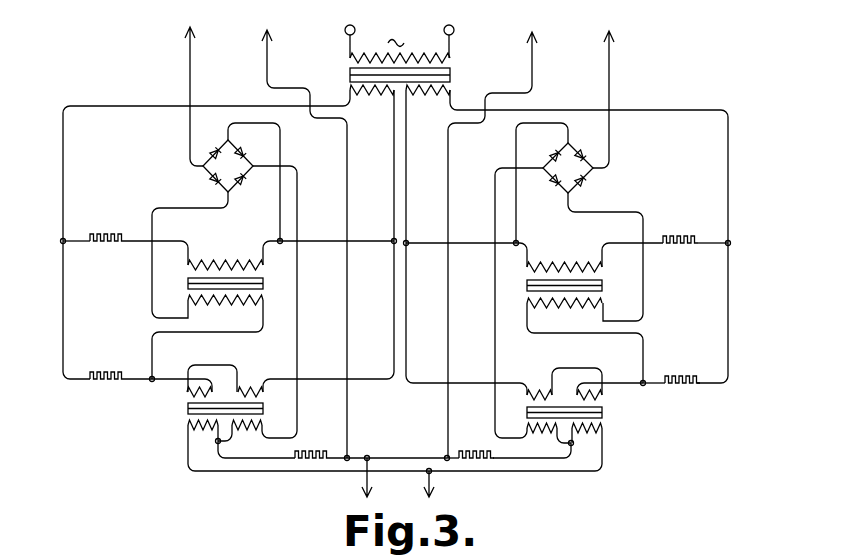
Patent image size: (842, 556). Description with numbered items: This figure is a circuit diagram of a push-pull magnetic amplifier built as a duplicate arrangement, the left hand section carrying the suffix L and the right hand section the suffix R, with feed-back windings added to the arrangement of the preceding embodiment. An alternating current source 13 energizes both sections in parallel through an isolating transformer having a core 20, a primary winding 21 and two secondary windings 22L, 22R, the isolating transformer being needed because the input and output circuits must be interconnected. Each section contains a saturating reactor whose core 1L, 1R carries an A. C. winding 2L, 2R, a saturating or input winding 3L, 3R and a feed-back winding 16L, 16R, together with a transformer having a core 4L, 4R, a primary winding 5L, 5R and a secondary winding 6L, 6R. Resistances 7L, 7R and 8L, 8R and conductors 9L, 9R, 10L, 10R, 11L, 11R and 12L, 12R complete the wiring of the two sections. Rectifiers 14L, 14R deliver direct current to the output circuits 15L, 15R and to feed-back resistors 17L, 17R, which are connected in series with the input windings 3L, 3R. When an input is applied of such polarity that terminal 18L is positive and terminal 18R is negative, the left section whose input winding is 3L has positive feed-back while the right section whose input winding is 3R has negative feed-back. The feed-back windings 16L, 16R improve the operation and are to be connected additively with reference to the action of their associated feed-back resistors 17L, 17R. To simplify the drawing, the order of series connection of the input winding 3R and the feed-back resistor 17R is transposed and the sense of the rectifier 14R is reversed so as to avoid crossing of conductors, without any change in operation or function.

The alternating current source 13 is at (399, 31).
The primary winding 21 is at (400, 49).
The core 20 is at (414, 74).
The secondary winding 22L is at (372, 102).
The secondary winding 22R is at (428, 102).
The output circuit 15L is at (266, 237).
The output circuit 15R is at (531, 238).
The conductor 12L is at (206, 234).
The conductor 12R is at (589, 236).
The conductor 11L is at (333, 234).
The conductor 11R is at (462, 236).
The conductor 9L is at (280, 285).
The conductor 9R is at (510, 285).
The conductor 10L is at (190, 253).
The conductor 10R is at (608, 256).
The rectifier 14L is at (243, 183).
The rectifier 14R is at (554, 184).
The resistance 7L is at (125, 241).
The resistance 7R is at (666, 244).
The primary winding 5L is at (291, 255).
The primary winding 5R is at (504, 257).
The core 4L is at (210, 282).
The core 4R is at (579, 286).
The secondary winding 6L is at (207, 337).
The secondary winding 6R is at (585, 340).
The resistance 8L is at (151, 373).
The resistance 8R is at (671, 372).
The A. C. winding 2L is at (224, 391).
The A. C. winding 2R is at (566, 393).
The core 1L is at (239, 411).
The core 1R is at (551, 412).
The saturating winding 3L is at (308, 445).
The saturating winding 3R is at (515, 447).
The feed-back winding 16L is at (240, 438).
The feed-back winding 16R is at (549, 441).
The feed-back resistor 17L is at (332, 449).
The feed-back resistor 17R is at (508, 449).
The input terminal 18L is at (348, 478).
The input terminal 18R is at (449, 484).